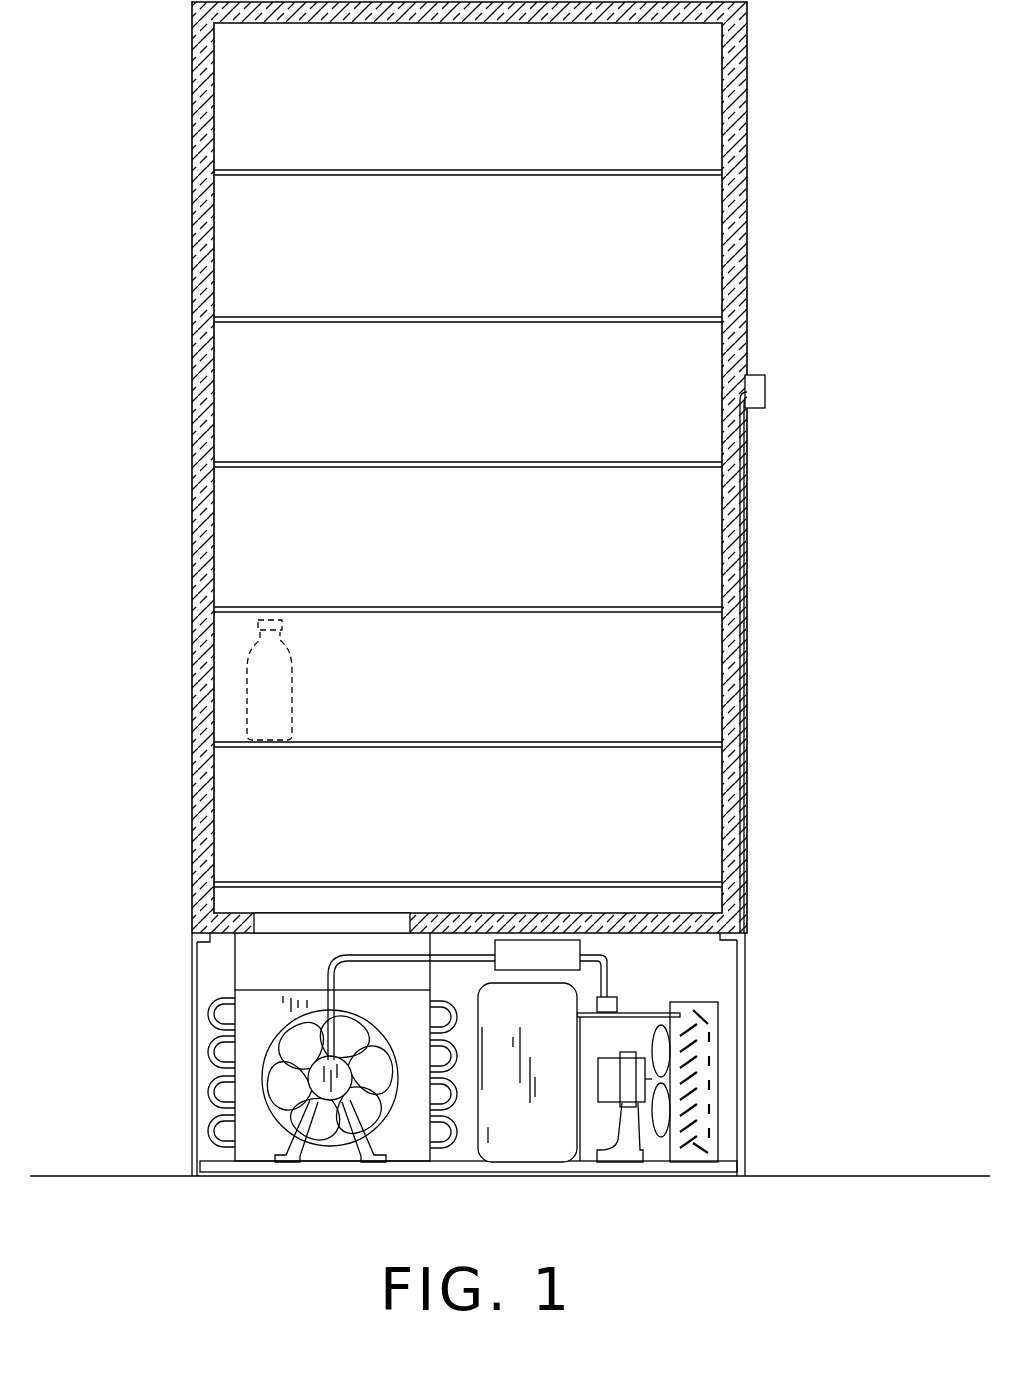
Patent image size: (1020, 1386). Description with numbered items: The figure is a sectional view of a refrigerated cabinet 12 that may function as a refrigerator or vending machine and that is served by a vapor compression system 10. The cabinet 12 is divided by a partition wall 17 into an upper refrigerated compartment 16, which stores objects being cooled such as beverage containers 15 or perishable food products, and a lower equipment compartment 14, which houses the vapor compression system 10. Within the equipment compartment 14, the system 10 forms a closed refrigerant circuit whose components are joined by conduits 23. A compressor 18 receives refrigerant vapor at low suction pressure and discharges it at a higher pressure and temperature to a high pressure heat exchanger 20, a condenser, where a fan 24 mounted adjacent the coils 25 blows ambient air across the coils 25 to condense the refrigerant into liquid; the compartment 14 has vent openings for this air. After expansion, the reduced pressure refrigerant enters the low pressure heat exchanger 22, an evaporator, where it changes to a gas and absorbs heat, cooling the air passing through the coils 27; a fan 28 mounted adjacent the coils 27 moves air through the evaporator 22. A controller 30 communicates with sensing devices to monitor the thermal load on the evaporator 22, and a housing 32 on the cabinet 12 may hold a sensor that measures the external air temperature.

The vapor compression system 10 is at (722, 966).
The refrigerated cabinet 12 is at (747, 240).
The equipment compartment 14 is at (212, 968).
The beverage containers 15 is at (292, 656).
The refrigerated compartment 16 is at (232, 376).
The partition wall 17 is at (236, 911).
The compressor 18 is at (519, 1127).
The high pressure heat exchanger 20 is at (707, 1157).
The low pressure heat exchanger 22 is at (257, 1133).
The conduits 23 is at (641, 1013).
The fan 24 is at (660, 1127).
The coils 25 is at (712, 1103).
The coils 27 is at (208, 1057).
The fan 28 is at (320, 1133).
The controller 30 is at (540, 948).
The housing 32 is at (766, 389).